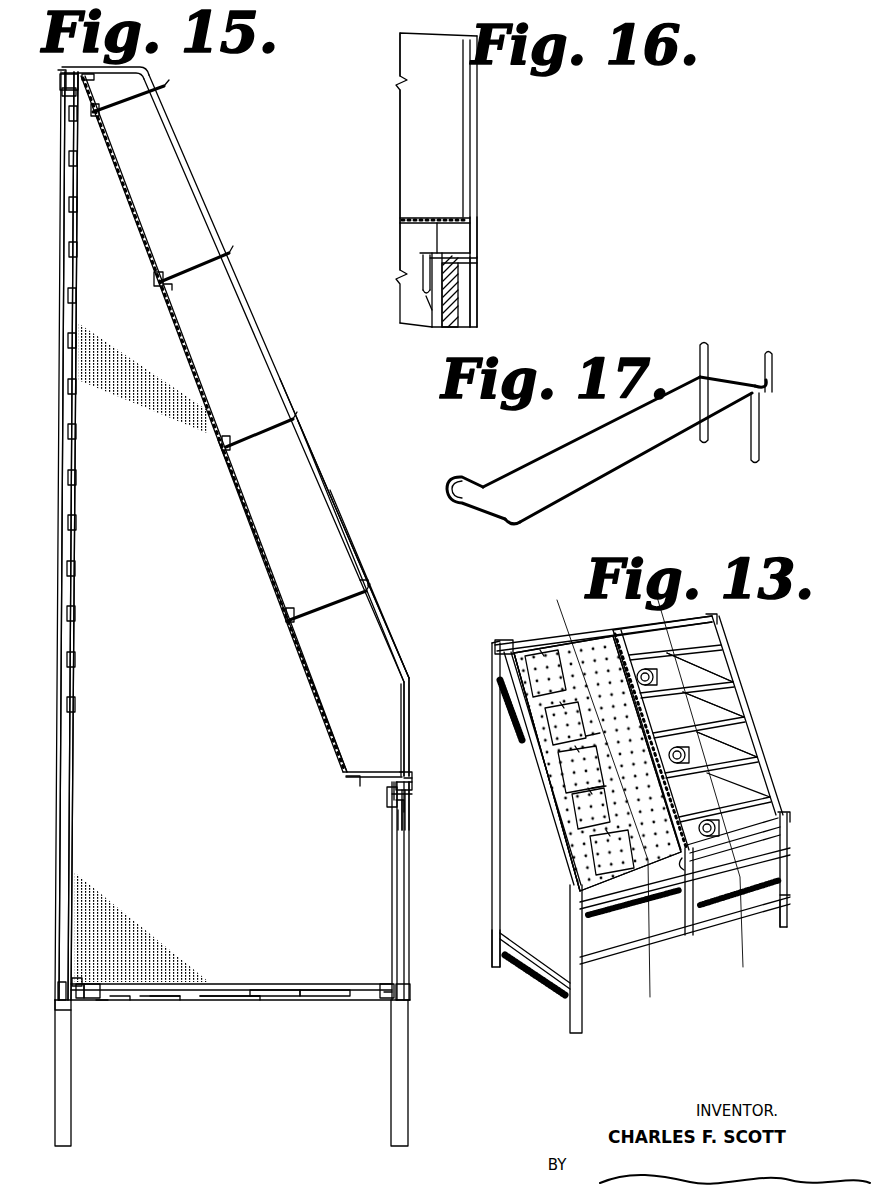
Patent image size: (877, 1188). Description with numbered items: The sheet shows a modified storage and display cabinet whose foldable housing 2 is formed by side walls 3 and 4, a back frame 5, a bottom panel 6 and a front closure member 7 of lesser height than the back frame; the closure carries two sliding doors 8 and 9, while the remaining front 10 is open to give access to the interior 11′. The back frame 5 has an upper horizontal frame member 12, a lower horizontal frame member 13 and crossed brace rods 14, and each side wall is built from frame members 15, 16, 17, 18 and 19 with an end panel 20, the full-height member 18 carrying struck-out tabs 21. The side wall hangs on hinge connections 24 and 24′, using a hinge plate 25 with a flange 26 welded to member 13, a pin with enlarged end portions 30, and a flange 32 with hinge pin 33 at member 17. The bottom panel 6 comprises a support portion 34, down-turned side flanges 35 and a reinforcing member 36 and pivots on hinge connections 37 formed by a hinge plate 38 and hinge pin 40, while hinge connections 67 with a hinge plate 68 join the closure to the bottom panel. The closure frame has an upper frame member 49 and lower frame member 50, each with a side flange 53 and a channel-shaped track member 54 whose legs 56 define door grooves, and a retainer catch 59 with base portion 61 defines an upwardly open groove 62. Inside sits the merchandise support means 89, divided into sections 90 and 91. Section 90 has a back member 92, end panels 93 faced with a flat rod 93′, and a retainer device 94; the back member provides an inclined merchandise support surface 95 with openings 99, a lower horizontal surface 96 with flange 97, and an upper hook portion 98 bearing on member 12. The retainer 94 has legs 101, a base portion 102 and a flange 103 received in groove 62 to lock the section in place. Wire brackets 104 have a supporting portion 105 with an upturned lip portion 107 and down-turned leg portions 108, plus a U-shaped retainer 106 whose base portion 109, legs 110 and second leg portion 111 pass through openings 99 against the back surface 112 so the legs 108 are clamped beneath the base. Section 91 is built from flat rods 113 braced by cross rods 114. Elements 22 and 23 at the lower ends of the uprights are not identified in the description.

In FIG. 15, the housing 2 is at (262, 340).
In FIG. 13, the housing 2 is at (778, 790).
In FIG. 15, the side wall 3 is at (88, 642).
In FIG. 13, the side wall 3 is at (760, 758).
In FIG. 13, the side wall 4 is at (498, 845).
In FIG. 15, the back frame 5 is at (60, 293).
In FIG. 13, the back frame 5 is at (494, 748).
In FIG. 15, the bottom panel 6 is at (324, 988).
In FIG. 15, the front closure member 7 is at (407, 940).
In FIG. 16, the front closure member 7 is at (472, 315).
In FIG. 13, the front closure member 7 is at (728, 915).
In FIG. 15, the sliding door 8 is at (406, 910).
In FIG. 16, the sliding door 8 is at (460, 285).
In FIG. 13, the sliding door 8 is at (768, 905).
In FIG. 15, the sliding door 9 is at (400, 912).
In FIG. 16, the sliding door 9 is at (446, 327).
In FIG. 13, the sliding door 9 is at (612, 972).
In FIG. 15, the front of the housing 10 is at (410, 680).
In FIG. 13, the interior of the housing 11′ is at (738, 712).
In FIG. 15, the upper horizontal frame member 12 is at (66, 92).
In FIG. 15, the lower horizontal frame member 13 is at (58, 996).
In FIG. 15, the brace rods 14 is at (62, 480).
In FIG. 13, the brace rods 14 is at (652, 594).
In FIG. 15, the frame member 15 is at (410, 877).
In FIG. 13, the frame member 15 is at (648, 993).
In FIG. 15, the frame member 16 is at (304, 450).
In FIG. 13, the frame member 17 is at (492, 650).
In FIG. 15, the frame member 18 is at (72, 822).
In FIG. 13, the frame member 18 is at (492, 958).
In FIG. 13, the frame member 19 is at (540, 962).
In FIG. 13, the end panel 20 is at (735, 690).
In FIG. 15, the tabs 21 is at (78, 578).
In FIG. 15, the rear leg 22 is at (72, 1113).
In FIG. 15, the front leg 23 is at (409, 1018).
In FIG. 13, the front leg 23 is at (790, 920).
In FIG. 15, the hinge connection 24 is at (106, 990).
In FIG. 15, the hinge connection 24′ is at (102, 68).
In FIG. 13, the hinge connection 24′ is at (714, 616).
In FIG. 15, the hinge plate 25 is at (120, 1004).
In FIG. 15, the flange 26 is at (60, 985).
In FIG. 15, the enlarged end portions 30 is at (102, 1004).
In FIG. 15, the flange 32 is at (60, 80).
In FIG. 15, the hinge pin 33 is at (124, 68).
In FIG. 15, the support portion 34 is at (276, 988).
In FIG. 15, the down-turned side flanges 35 is at (168, 1000).
In FIG. 15, the reinforcing member 36 is at (226, 1000).
In FIG. 15, the hinge connection 37 is at (76, 978).
In FIG. 15, the hinge plate 38 is at (60, 1008).
In FIG. 15, the hinge pin 40 is at (80, 988).
In FIG. 15, the upper frame member 49 is at (410, 796).
In FIG. 16, the upper frame member 49 is at (478, 262).
In FIG. 15, the lower frame member 50 is at (410, 998).
In FIG. 13, the lower frame member 50 is at (788, 900).
In FIG. 15, the side flange 53 is at (410, 805).
In FIG. 13, the track member 54 is at (775, 858).
In FIG. 16, the legs 56 is at (470, 270).
In FIG. 15, the retainer catch 59 is at (396, 806).
In FIG. 16, the retainer catch 59 is at (432, 318).
In FIG. 15, the base portion 61 is at (398, 814).
In FIG. 16, the base portion 61 is at (428, 298).
In FIG. 15, the groove 62 is at (394, 786).
In FIG. 16, the groove 62 is at (422, 262).
In FIG. 15, the hinge connection 67 is at (388, 1002).
In FIG. 15, the hinge plate 68 is at (388, 988).
In FIG. 15, the merchandise support means 89 is at (88, 80).
In FIG. 15, the section 90 is at (250, 320).
In FIG. 16, the section 90 is at (400, 157).
In FIG. 13, the section 90 is at (552, 644).
In FIG. 13, the section 91 is at (620, 633).
In FIG. 15, the back member 92 is at (143, 238).
In FIG. 15, the end panels 93 is at (370, 610).
In FIG. 16, the end panels 93 is at (400, 100).
In FIG. 13, the end panels 93 is at (613, 637).
In FIG. 15, the flat rod 93′ is at (345, 526).
In FIG. 16, the flat rod 93′ is at (472, 94).
In FIG. 13, the flat rod 93′ is at (694, 880).
In FIG. 15, the retainer device 94 is at (411, 786).
In FIG. 16, the retainer device 94 is at (478, 246).
In FIG. 13, the retainer device 94 is at (606, 912).
In FIG. 15, the inclined merchandise support surface 95 is at (278, 572).
In FIG. 13, the inclined merchandise support surface 95 is at (548, 762).
In FIG. 15, the lower horizontal surface 96 is at (355, 780).
In FIG. 16, the lower horizontal surface 96 is at (424, 218).
In FIG. 13, the lower horizontal surface 96 is at (672, 878).
In FIG. 15, the flange 97 is at (396, 776).
In FIG. 16, the flange 97 is at (466, 236).
In FIG. 15, the upper hook portion 98 is at (62, 70).
In FIG. 13, the upper hook portion 98 is at (506, 642).
In FIG. 15, the openings 99 is at (137, 248).
In FIG. 13, the openings 99 is at (576, 848).
In FIG. 15, the legs 101 is at (408, 772).
In FIG. 16, the legs 101 is at (436, 250).
In FIG. 15, the base portion 102 is at (412, 778).
In FIG. 16, the base portion 102 is at (472, 222).
In FIG. 15, the flange 103 is at (402, 822).
In FIG. 16, the flange 103 is at (424, 292).
In FIG. 15, the merchandise support brackets 104 is at (315, 612).
In FIG. 17, the merchandise support brackets 104 is at (622, 478).
In FIG. 13, the merchandise support brackets 104 is at (580, 806).
In FIG. 15, the supporting portion 105 is at (186, 272).
In FIG. 17, the supporting portion 105 is at (566, 504).
In FIG. 15, the retainer 106 is at (232, 444).
In FIG. 17, the retainer 106 is at (748, 392).
In FIG. 15, the upturned lip portion 107 is at (230, 252).
In FIG. 17, the upturned lip portion 107 is at (493, 512).
In FIG. 13, the upturned lip portion 107 is at (588, 734).
In FIG. 15, the down-turned leg portions 108 is at (170, 290).
In FIG. 17, the down-turned leg portions 108 is at (760, 432).
In FIG. 17, the base portion 109 is at (716, 380).
In FIG. 17, the legs 110 is at (700, 372).
In FIG. 17, the second leg portion 111 is at (772, 358).
In FIG. 15, the back surface 112 is at (224, 476).
In FIG. 13, the flat rods 113 is at (786, 816).
In FIG. 13, the cross rods 114 is at (728, 656).